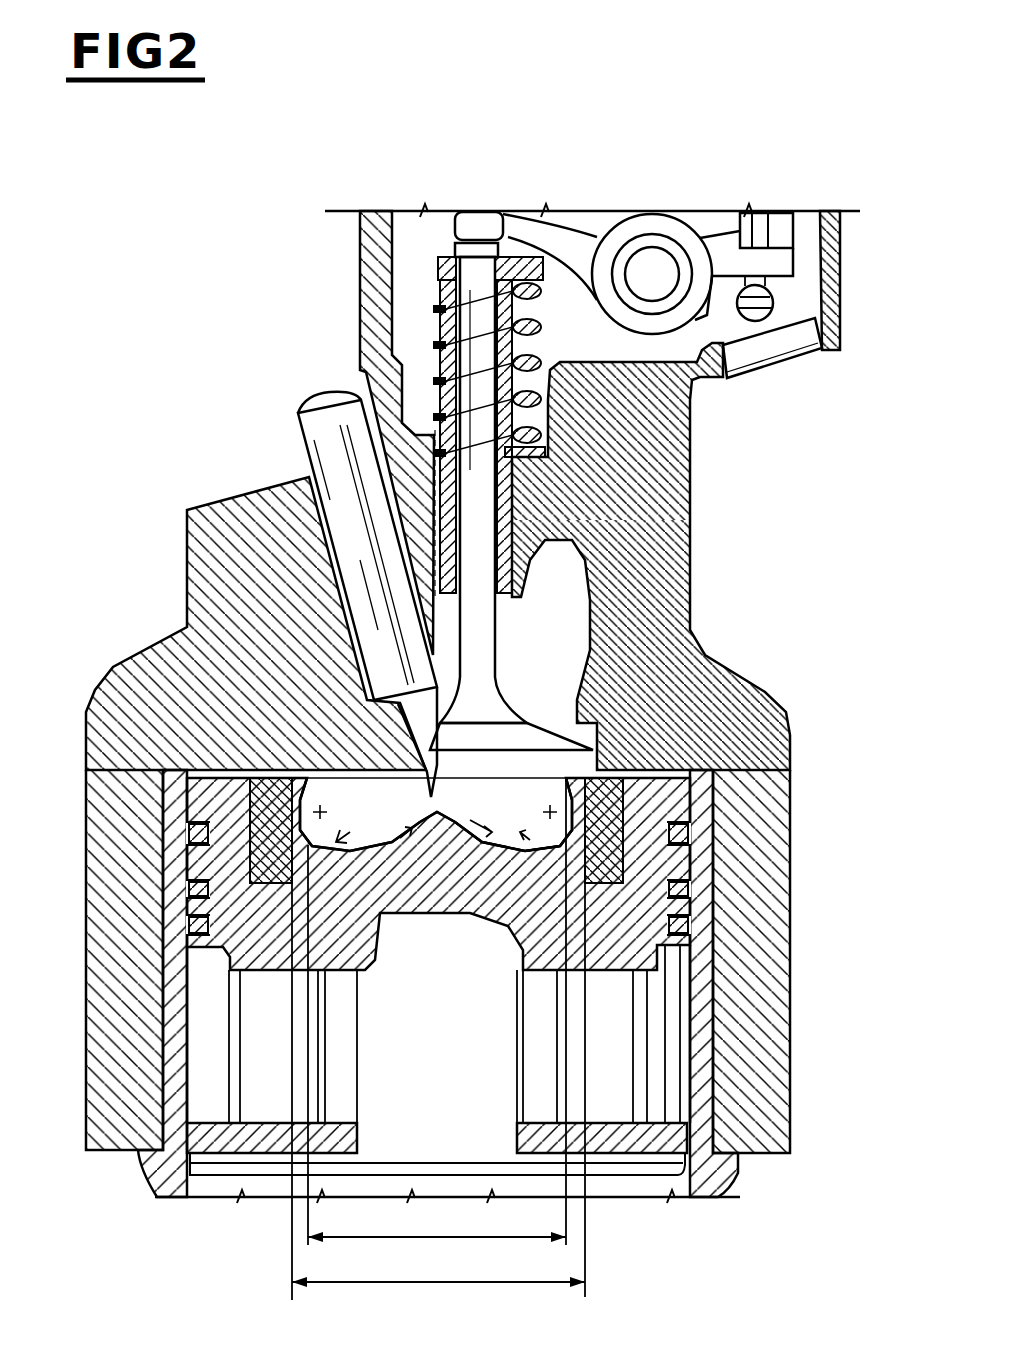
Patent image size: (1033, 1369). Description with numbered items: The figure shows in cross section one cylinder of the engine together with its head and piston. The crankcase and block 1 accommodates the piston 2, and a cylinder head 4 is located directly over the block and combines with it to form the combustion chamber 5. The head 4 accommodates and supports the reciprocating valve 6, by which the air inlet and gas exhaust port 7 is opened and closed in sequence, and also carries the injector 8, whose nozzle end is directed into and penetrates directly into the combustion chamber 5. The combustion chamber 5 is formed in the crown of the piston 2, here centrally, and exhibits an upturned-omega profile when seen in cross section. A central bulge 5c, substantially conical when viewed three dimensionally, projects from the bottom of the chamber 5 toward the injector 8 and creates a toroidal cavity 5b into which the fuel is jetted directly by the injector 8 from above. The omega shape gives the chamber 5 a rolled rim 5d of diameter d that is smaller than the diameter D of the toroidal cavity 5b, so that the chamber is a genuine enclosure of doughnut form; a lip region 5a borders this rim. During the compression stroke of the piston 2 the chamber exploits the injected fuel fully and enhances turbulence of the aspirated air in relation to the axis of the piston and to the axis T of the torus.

The crankcase 1 is at (720, 1178).
The piston 2 is at (650, 908).
The cylinder head 4 is at (747, 693).
The combustion chamber 5 is at (400, 870).
The chamber lip / squish edge 5a is at (585, 800).
The toroidal cavity 5b is at (330, 785).
The central bulge 5c is at (600, 862).
The rolled rim 5d is at (580, 745).
The reciprocating valve 6 is at (485, 540).
The air inlet and gas exhaust port 7 is at (600, 808).
The injector 8 is at (330, 425).
The axis of the torus T is at (300, 850).
The diameter of the rolled rim d is at (437, 1224).
The diameter of the toroidal cavity D is at (438, 1267).